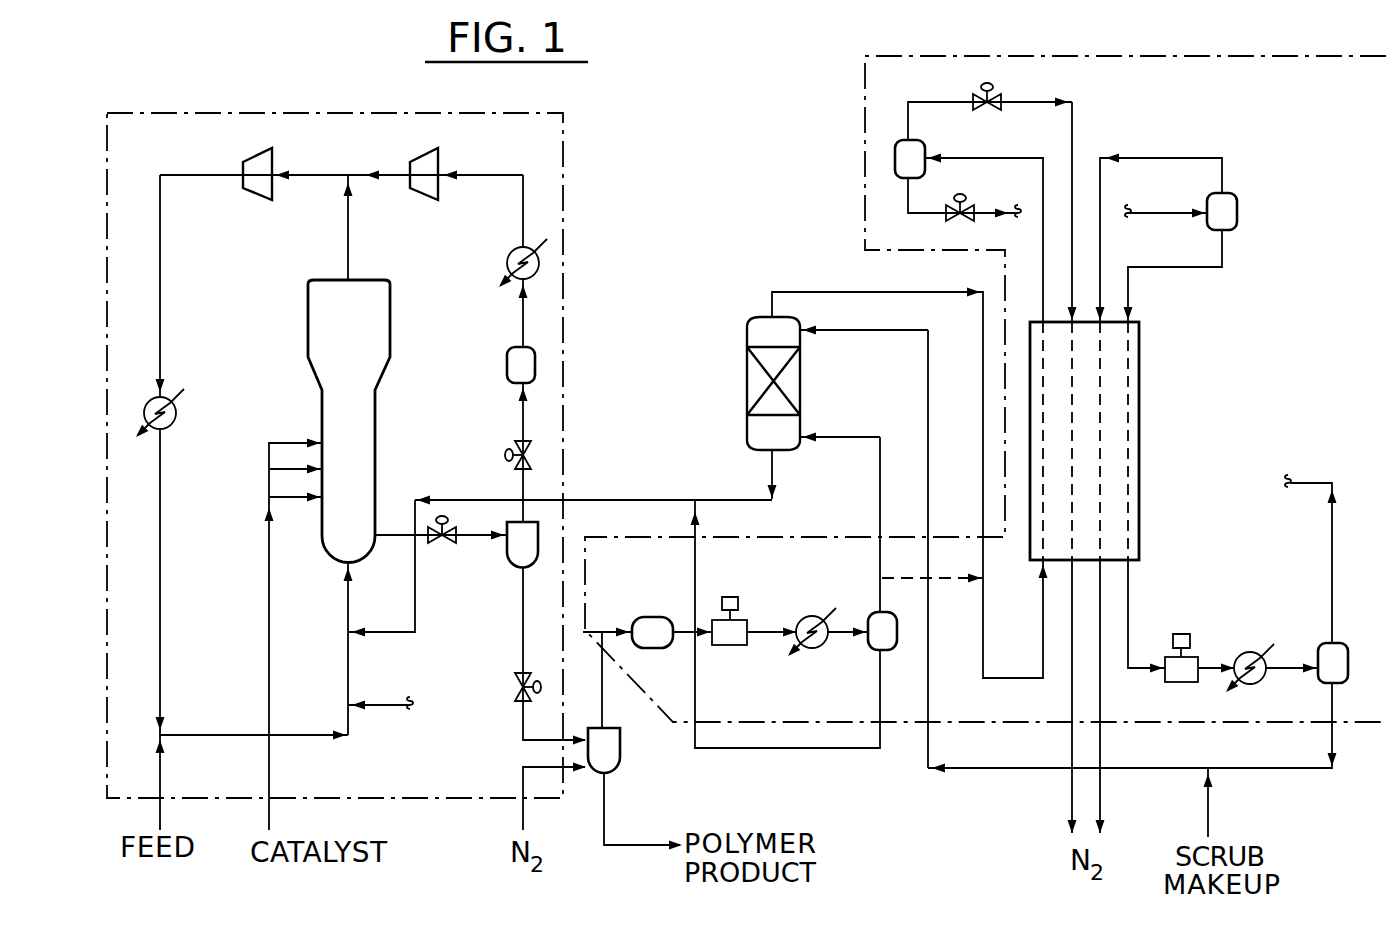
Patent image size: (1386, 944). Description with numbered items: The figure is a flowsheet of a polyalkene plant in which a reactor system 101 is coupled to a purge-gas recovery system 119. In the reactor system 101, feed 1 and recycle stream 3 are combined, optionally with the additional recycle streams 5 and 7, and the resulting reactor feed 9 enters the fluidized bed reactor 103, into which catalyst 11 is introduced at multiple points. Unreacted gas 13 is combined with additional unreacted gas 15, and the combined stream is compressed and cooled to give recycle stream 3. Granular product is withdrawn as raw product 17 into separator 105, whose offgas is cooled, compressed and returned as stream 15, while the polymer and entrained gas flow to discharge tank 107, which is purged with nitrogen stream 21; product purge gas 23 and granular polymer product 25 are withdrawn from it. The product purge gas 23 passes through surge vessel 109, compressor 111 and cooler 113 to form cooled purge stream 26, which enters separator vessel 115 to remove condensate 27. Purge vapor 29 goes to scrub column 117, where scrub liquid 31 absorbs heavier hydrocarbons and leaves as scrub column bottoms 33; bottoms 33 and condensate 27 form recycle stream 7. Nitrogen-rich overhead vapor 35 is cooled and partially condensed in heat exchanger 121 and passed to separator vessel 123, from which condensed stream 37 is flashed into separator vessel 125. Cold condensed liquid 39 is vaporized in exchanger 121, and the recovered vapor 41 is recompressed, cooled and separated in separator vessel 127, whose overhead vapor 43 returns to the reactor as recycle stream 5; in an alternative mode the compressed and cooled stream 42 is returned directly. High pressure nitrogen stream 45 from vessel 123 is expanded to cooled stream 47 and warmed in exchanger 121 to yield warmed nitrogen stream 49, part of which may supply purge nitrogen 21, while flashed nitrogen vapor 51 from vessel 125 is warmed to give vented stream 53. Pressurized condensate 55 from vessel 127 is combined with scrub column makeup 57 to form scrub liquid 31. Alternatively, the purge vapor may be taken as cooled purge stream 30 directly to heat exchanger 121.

The feed 1 is at (160, 776).
The recycle stream 3 is at (160, 645).
The recycle stream 5 is at (385, 707).
The recycle stream 7 is at (484, 499).
The reactor feed 9 is at (348, 603).
The catalyst 11 is at (269, 775).
The unreacted gas 13 is at (348, 236).
The additional unreacted gas 15 is at (375, 172).
The raw product 17 is at (473, 548).
The nitrogen stream 21 is at (523, 825).
The product purge gas 23 is at (605, 683).
The granular polymer product 25 is at (602, 798).
The cooled purge stream 26 is at (848, 627).
The condensate 27 is at (795, 748).
The purge vapor 29 is at (843, 437).
The cooled purge stream 30 is at (943, 572).
The scrub liquid 31 is at (928, 359).
The scrub column bottoms 33 is at (722, 498).
The nitrogen-rich overhead vapor 35 is at (810, 291).
The condensed ethylene stream 37 is at (930, 213).
The cold condensed liquid 39 is at (1187, 268).
The recovered vapor 41 is at (1128, 614).
The compressed and cooled recovered stream 42 is at (1284, 670).
The overhead vapor 43 is at (1332, 550).
The high pressure nitrogen stream 45 is at (950, 100).
The cooled expanded stream 47 is at (1073, 140).
The warmed nitrogen stream 49 is at (1072, 801).
The low pressure flashed nitrogen vapor stream 51 is at (1165, 158).
The warmed nitrogen stream 53 is at (1100, 800).
The pressurized condensate 55 is at (1305, 768).
The scrub column makeup 57 is at (1210, 822).
The reactor system 101 is at (607, 236).
The fluidized bed reactor 103 is at (308, 335).
The separator 105 is at (505, 570).
The discharge tank 107 is at (622, 762).
The surge vessel 109 is at (652, 615).
The compressor 111 is at (730, 645).
The cooler 113 is at (798, 617).
The separator vessel 115 is at (863, 653).
The scrub column 117 is at (746, 398).
The recovery system 119 is at (836, 124).
The heat exchanger 121 is at (1139, 463).
The separator vessel 123 is at (928, 142).
The separator vessel 125 is at (1237, 210).
The separator vessel 127 is at (1320, 643).